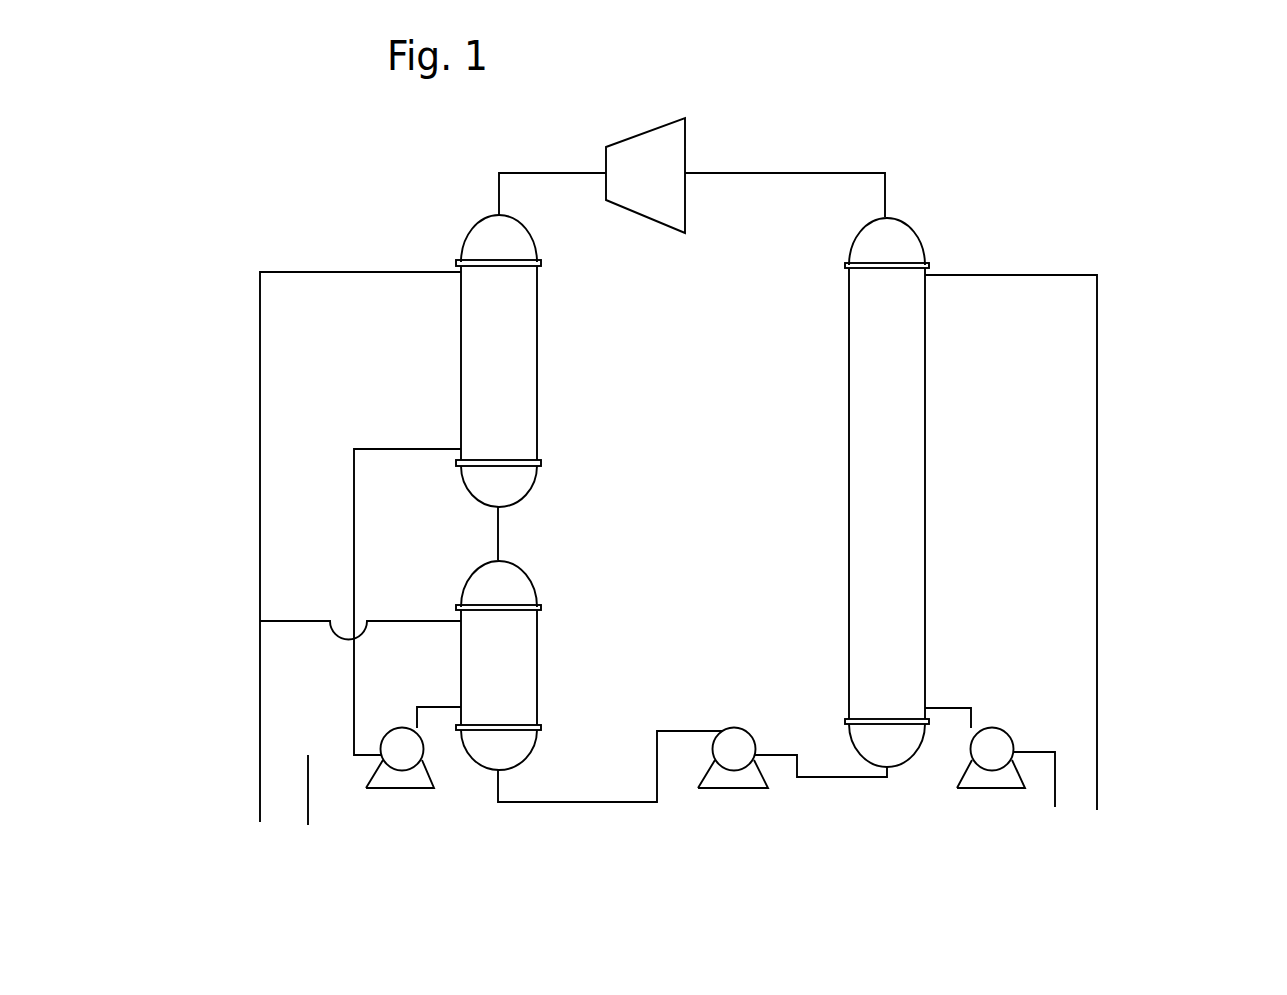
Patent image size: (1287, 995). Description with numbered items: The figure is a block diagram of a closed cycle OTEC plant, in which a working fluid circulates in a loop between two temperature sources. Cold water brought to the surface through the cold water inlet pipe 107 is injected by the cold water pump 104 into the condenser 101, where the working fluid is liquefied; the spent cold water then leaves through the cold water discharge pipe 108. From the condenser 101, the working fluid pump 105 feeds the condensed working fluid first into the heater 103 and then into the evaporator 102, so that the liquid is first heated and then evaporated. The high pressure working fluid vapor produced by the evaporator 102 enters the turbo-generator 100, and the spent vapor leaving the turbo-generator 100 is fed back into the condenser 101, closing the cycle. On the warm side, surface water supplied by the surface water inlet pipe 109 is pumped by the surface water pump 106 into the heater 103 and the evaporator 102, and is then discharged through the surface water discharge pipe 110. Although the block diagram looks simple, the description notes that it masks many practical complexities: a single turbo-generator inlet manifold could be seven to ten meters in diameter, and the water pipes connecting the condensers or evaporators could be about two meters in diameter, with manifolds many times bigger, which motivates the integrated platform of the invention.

The turbo-generator 100 is at (658, 160).
The condenser 101 is at (892, 320).
The evaporator 102 is at (488, 285).
The heater 103 is at (487, 707).
The cold water pump 104 is at (992, 748).
The working fluid pump 105 is at (735, 747).
The surface water pump 106 is at (409, 747).
The cold water inlet pipe 107 is at (1057, 773).
The cold water discharge pipe 108 is at (1097, 660).
The surface water inlet pipe 109 is at (307, 790).
The surface water discharge pipe 110 is at (261, 672).